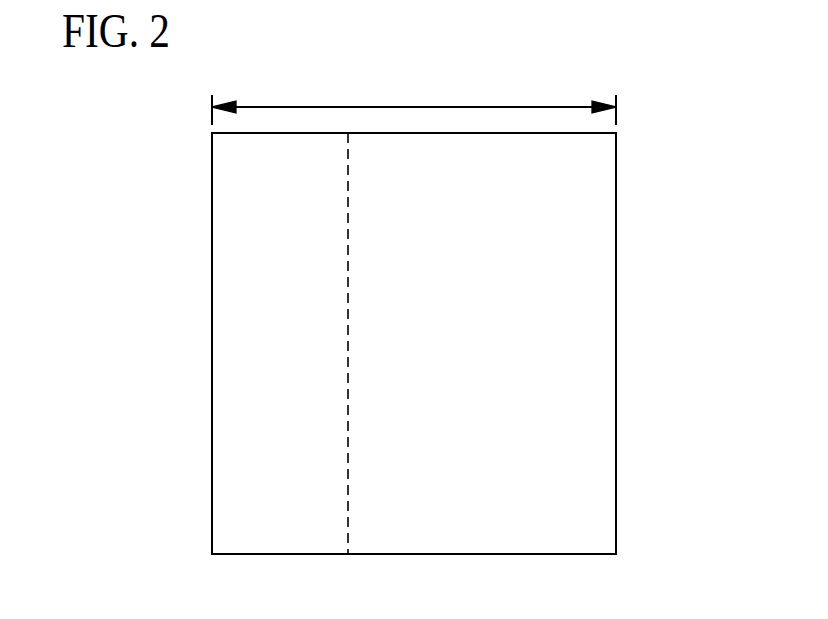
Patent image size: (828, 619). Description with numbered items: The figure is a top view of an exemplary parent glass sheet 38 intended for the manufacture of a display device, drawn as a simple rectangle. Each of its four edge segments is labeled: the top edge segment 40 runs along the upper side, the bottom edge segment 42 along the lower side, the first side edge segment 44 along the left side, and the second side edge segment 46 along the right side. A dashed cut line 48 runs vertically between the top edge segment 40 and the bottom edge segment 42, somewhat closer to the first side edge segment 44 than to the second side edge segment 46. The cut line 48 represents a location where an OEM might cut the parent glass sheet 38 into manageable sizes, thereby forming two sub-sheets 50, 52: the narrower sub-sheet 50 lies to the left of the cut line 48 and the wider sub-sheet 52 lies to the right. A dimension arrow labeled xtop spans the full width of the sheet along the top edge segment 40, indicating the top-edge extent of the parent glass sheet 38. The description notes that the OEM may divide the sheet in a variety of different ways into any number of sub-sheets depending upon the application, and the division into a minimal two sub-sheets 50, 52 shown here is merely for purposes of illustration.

The parent glass sheet 38 is at (640, 150).
The top edge segment 40 is at (362, 133).
The bottom edge segment 42 is at (400, 556).
The first side edge segment 44 is at (211, 333).
The second side edge segment 46 is at (616, 317).
The cut line 48 is at (348, 224).
The sub-sheet 50 is at (232, 194).
The sub-sheet 52 is at (600, 209).
The top width dimension x_top xtop is at (490, 107).